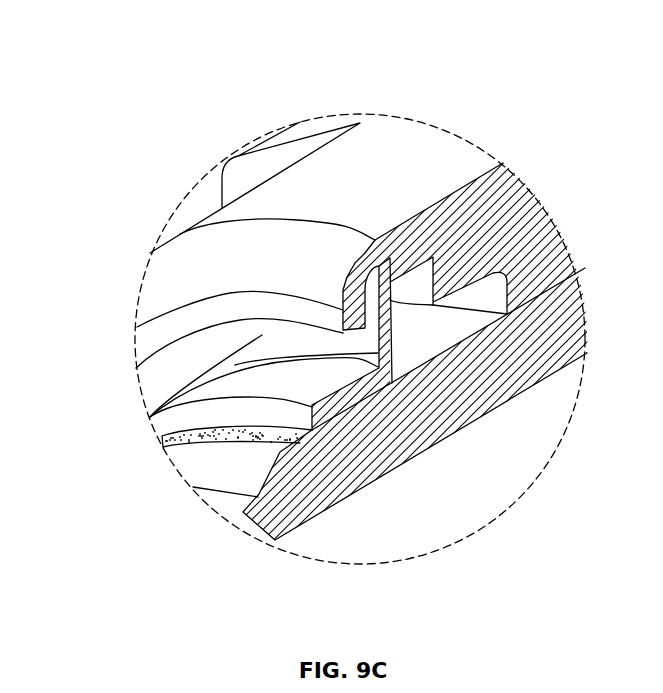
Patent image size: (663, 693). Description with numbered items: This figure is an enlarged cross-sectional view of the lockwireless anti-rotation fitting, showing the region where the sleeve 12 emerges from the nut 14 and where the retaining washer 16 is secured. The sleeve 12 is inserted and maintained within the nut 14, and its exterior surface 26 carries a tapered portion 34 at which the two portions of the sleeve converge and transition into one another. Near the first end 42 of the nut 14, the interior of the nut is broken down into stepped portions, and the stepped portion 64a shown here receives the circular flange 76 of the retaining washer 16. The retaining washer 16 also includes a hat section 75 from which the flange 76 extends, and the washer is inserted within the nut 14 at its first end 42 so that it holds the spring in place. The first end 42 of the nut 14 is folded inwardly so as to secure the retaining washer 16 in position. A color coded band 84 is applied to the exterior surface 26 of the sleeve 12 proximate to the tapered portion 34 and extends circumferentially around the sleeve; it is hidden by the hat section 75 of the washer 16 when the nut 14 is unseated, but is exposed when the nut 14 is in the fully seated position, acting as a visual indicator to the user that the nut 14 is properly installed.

The sleeve 12 is at (245, 515).
The nut 14 is at (517, 216).
The retaining washer 16 is at (150, 417).
The exterior surface 26 is at (333, 437).
The tapered portion 34 is at (238, 465).
The first end 42 is at (212, 278).
The stepped portion 64a is at (371, 256).
The hat section 75 is at (312, 380).
The flange 76 is at (200, 345).
The color coded band 84 is at (218, 441).